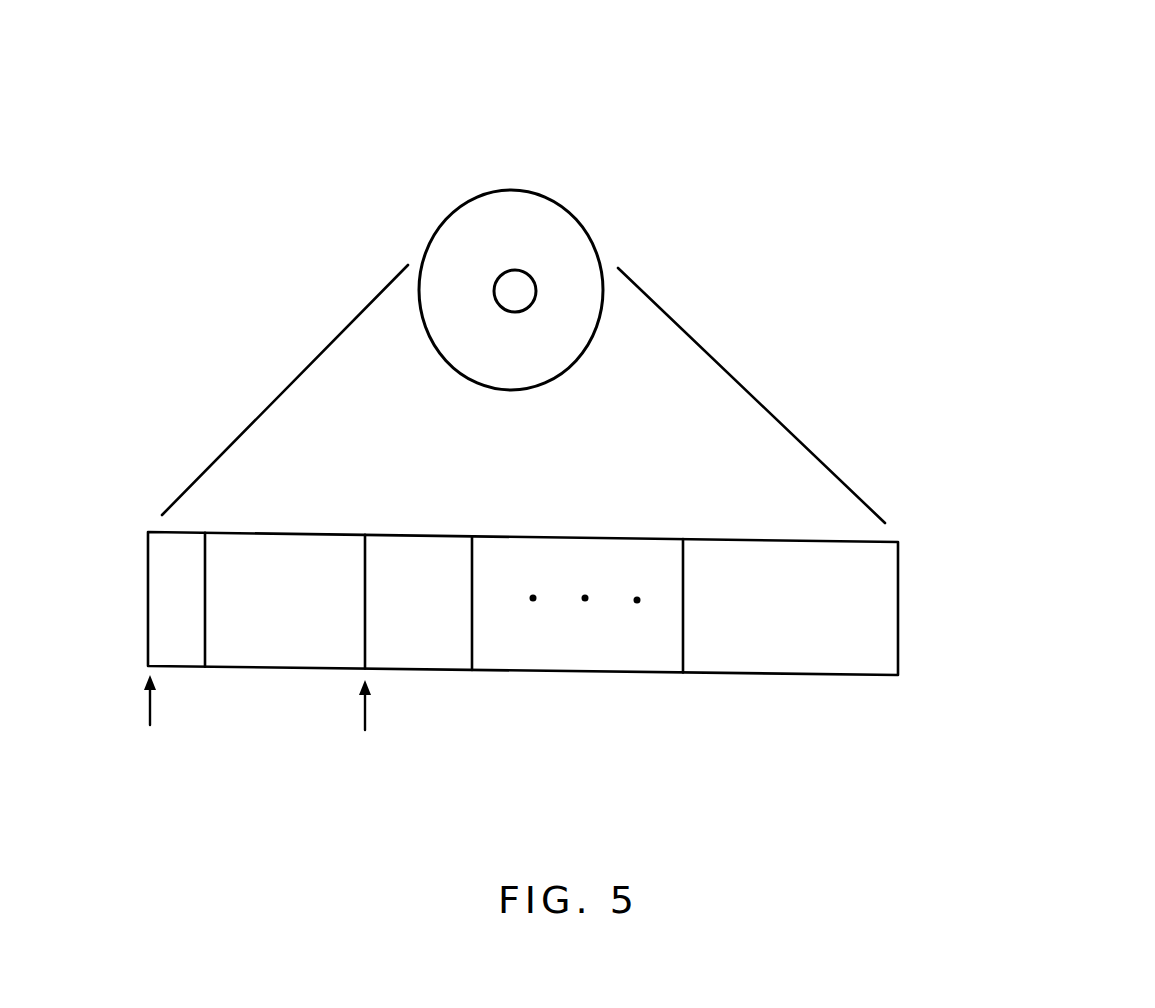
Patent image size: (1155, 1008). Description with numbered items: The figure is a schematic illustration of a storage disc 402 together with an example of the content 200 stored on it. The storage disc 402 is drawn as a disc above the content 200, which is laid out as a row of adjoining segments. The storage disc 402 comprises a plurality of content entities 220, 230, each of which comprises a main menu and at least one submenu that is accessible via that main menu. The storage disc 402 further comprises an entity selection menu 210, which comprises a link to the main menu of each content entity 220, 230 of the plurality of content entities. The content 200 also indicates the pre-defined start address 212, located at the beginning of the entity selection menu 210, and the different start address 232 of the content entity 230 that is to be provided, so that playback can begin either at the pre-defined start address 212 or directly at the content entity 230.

The storage disc 402 is at (523, 172).
The content 200 is at (982, 613).
The entity selection menu 210 is at (183, 628).
The pre-defined start address 212 is at (158, 717).
The content entity 220 is at (298, 523).
The content entity 230 is at (428, 525).
The different start address 232 is at (372, 714).